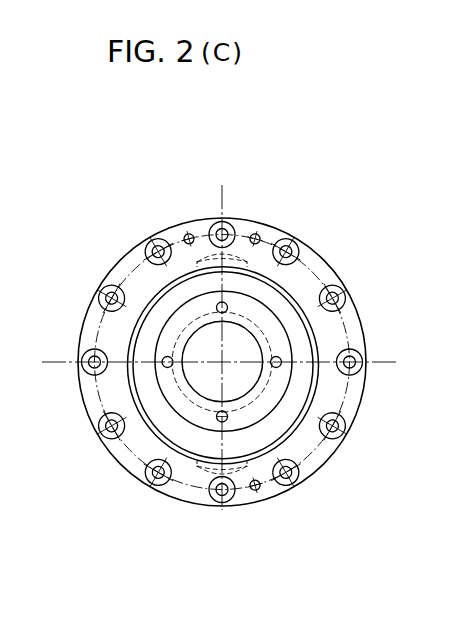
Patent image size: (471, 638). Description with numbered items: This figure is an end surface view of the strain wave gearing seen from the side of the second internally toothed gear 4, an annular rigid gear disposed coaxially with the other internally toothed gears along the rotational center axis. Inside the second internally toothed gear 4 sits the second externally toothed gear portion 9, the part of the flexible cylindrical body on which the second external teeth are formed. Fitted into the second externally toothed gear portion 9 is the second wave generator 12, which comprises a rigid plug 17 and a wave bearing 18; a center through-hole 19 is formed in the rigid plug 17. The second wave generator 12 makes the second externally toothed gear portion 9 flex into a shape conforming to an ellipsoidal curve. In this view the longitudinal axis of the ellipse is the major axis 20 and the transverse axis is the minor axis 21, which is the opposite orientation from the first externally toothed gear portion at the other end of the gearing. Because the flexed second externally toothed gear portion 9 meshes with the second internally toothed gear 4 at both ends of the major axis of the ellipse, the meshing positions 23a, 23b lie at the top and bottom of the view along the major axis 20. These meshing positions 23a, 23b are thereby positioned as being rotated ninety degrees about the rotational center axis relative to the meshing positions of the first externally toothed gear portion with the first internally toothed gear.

The second internally toothed gear 4 is at (264, 240).
The second externally toothed gear portion 9 is at (291, 286).
The second wave generator 12 is at (389, 255).
The rigid plug 17 is at (270, 325).
The wave bearing 18 is at (300, 292).
The center through-hole 19 is at (255, 345).
The major axis 20 is at (221, 198).
The minor axis 21 is at (391, 368).
The meshing position 23a is at (215, 255).
The meshing position 23b is at (229, 469).